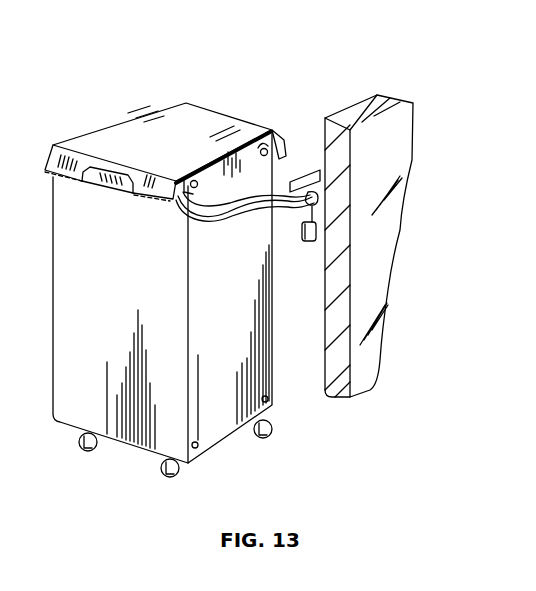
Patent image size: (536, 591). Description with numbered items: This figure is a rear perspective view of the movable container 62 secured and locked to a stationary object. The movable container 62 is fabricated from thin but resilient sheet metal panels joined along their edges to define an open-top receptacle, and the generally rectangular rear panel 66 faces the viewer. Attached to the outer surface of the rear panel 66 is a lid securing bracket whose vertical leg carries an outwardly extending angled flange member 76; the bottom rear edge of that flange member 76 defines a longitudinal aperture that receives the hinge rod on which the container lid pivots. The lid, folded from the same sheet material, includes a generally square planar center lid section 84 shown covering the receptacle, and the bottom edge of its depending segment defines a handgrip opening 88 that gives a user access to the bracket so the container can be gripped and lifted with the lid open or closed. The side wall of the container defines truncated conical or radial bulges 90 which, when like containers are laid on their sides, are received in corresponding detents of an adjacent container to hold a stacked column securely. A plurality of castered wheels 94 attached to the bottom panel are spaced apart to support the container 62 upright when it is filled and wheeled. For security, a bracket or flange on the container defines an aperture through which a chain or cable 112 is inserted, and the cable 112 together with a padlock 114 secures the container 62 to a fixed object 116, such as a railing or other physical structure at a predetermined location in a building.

The movable container 62 is at (133, 100).
The center lid section 84 is at (195, 120).
The handgrip opening 88 is at (95, 165).
The angled flange member 76 is at (123, 185).
The rear panel 66 is at (125, 299).
The bulges 90 is at (200, 170).
The castered wheels 94 is at (90, 452).
The cable 112 is at (283, 184).
The padlock 114 is at (310, 243).
The fixed object 116 is at (317, 112).